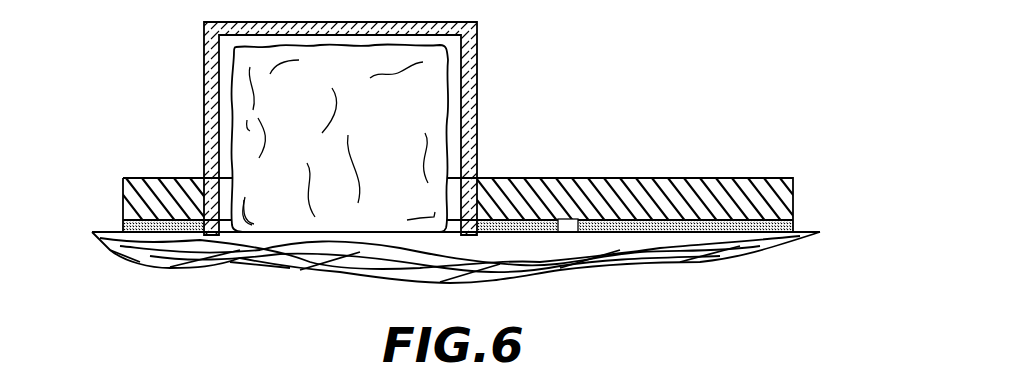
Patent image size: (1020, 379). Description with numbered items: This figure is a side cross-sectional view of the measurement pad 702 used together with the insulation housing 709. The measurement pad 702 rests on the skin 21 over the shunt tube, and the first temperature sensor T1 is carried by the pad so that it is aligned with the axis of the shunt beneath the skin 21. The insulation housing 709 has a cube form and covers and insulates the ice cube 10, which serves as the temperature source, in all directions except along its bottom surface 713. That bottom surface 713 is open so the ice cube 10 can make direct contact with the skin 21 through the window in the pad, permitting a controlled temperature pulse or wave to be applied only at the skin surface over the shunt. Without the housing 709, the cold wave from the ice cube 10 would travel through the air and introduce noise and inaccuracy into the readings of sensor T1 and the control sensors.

The insulation housing 709 is at (200, 33).
The ice cube 10 is at (420, 107).
The bottom surface 713 is at (262, 218).
The measurement pad 702 is at (730, 194).
The first temperature sensor T1 is at (571, 232).
The skin 21 is at (266, 273).